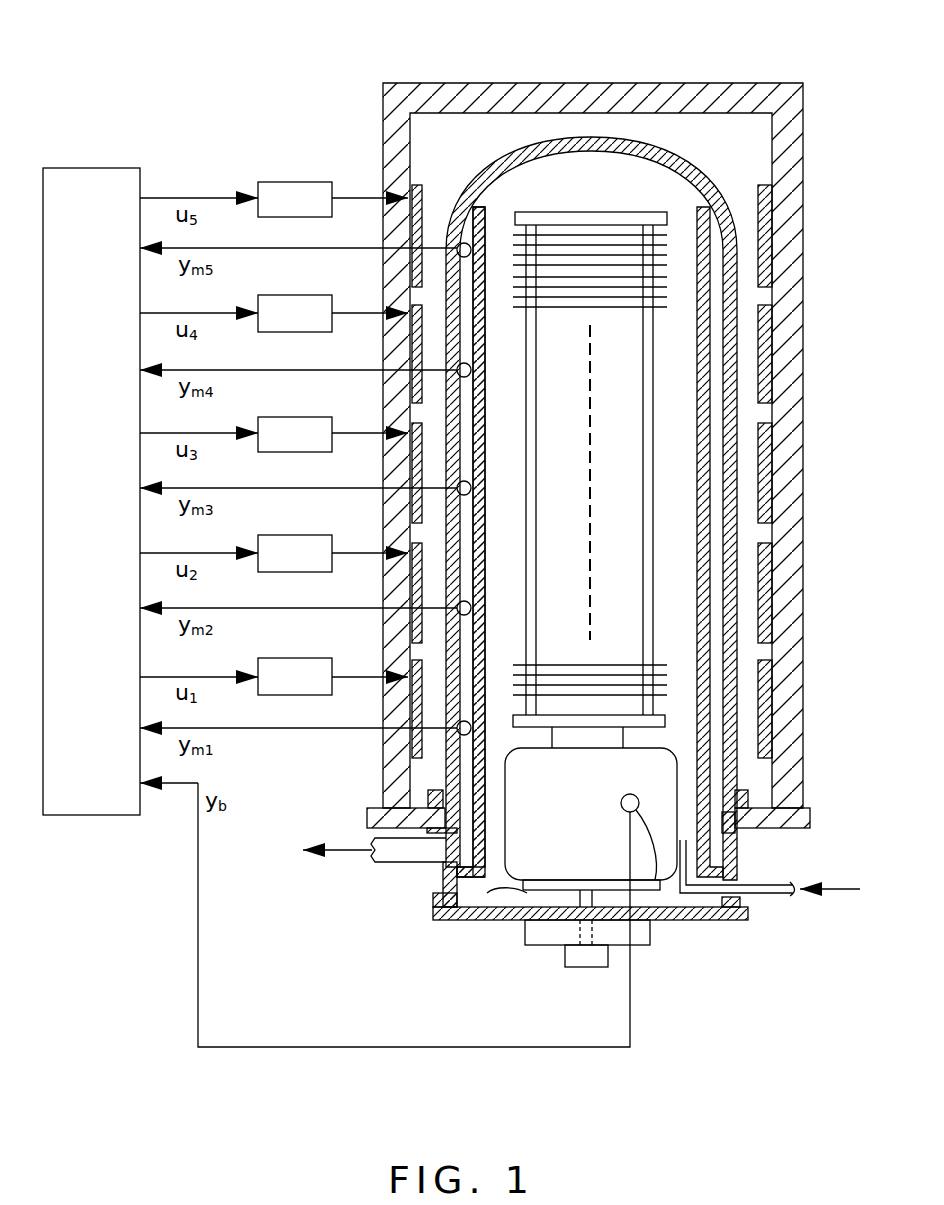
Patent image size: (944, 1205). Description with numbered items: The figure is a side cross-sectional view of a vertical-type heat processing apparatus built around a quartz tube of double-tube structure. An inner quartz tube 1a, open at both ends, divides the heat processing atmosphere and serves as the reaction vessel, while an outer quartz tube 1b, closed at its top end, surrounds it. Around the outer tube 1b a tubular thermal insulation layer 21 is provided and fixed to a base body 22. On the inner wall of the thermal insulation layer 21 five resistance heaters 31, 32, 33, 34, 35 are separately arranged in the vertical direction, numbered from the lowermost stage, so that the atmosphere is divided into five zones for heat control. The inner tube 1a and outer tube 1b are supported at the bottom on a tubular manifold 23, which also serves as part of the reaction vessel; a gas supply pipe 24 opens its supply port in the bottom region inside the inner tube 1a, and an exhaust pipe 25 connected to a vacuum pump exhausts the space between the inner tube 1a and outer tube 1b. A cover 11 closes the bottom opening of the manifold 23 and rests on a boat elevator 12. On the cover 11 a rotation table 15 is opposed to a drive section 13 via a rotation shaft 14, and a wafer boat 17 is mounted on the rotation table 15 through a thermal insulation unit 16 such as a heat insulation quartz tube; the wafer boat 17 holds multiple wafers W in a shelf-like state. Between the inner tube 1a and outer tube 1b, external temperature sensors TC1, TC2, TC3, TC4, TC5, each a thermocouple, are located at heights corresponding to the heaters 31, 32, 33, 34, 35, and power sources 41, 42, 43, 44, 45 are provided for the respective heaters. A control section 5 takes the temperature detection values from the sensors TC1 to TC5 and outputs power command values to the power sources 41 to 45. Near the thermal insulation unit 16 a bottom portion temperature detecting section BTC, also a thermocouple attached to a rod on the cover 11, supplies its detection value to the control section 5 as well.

The control section 5 is at (104, 168).
The power source 45 is at (292, 182).
The power source 44 is at (292, 295).
The power source 43 is at (292, 417).
The power source 42 is at (292, 535).
The power source 41 is at (292, 658).
The thermal insulation layer 21 is at (803, 118).
The heater 35 is at (772, 214).
The heater 34 is at (772, 365).
The heater 33 is at (765, 467).
The heater 32 is at (772, 585).
The heater 31 is at (765, 712).
The outer quartz tube 1b is at (532, 140).
The inner quartz tube 1a is at (700, 207).
The wafer boat 17 is at (655, 548).
The wafer W is at (613, 305).
The thermal insulation unit 16 is at (690, 790).
The rotation table 15 is at (492, 895).
The rotation shaft 14 is at (525, 908).
The boat elevator 12 is at (545, 945).
The drive section 13 is at (585, 967).
The bottom portion temperature detecting section BTC is at (648, 860).
The base body 22 is at (790, 826).
The exhaust pipe 25 is at (390, 862).
The manifold 23 is at (735, 870).
The gas supply pipe 24 is at (770, 895).
The cover 11 is at (732, 920).
The external temperature sensor TC5 is at (460, 243).
The external temperature sensor TC4 is at (457, 369).
The external temperature sensor TC3 is at (457, 487).
The external temperature sensor TC2 is at (457, 607).
The external temperature sensor TC1 is at (457, 729).